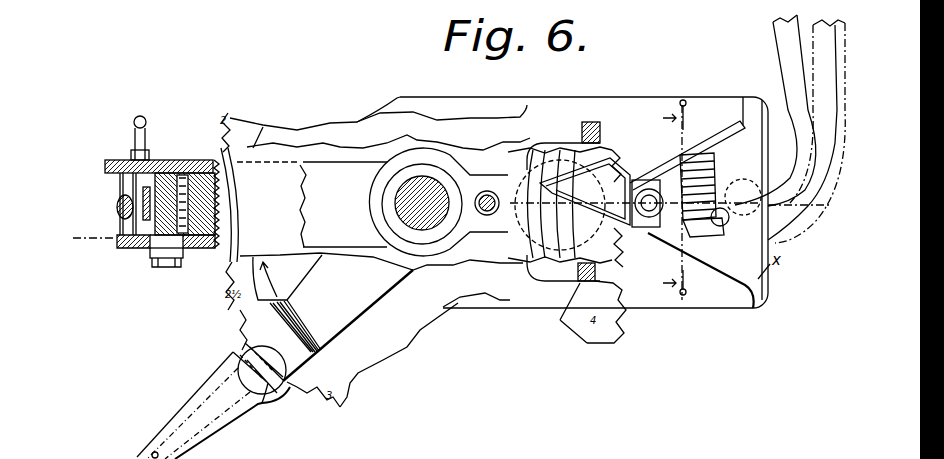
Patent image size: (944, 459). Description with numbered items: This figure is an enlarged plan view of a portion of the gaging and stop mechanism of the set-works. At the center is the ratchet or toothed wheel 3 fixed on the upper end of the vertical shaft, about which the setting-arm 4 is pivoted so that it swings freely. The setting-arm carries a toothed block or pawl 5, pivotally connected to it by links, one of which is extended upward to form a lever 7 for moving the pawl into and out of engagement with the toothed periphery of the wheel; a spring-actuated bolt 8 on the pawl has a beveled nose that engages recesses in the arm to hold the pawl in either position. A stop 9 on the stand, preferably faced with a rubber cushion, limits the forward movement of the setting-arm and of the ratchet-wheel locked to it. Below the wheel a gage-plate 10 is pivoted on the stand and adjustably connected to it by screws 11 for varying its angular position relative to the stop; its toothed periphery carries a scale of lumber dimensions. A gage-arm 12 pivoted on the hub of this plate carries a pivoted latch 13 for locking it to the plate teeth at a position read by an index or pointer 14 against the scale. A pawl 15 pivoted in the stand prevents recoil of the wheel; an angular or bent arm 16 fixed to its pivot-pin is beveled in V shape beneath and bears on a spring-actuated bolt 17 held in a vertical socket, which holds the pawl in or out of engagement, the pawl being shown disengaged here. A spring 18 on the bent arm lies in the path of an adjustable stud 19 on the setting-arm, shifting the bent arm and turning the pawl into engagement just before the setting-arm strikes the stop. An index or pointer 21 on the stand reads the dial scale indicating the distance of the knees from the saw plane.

The ratchet or toothed wheel 3 is at (438, 198).
The setting-arm 4 is at (197, 153).
The toothed block or pawl 5 is at (224, 201).
The lever 7 is at (120, 217).
The spring-actuated bolt 8 is at (182, 256).
The stop 9 is at (712, 129).
The gage-plate 10 is at (396, 338).
The screws 11 is at (605, 135).
The gage-arm 12 is at (293, 291).
The pivoted latch 13 is at (245, 375).
The index or pointer 14 is at (253, 316).
The pawl 15 is at (703, 236).
The angular or bent arm 16 is at (782, 73).
The spring-actuated bolt 17 is at (723, 224).
The spring 18 is at (717, 160).
The adjustable stud 19 is at (146, 130).
The index or pointer 21 is at (595, 183).